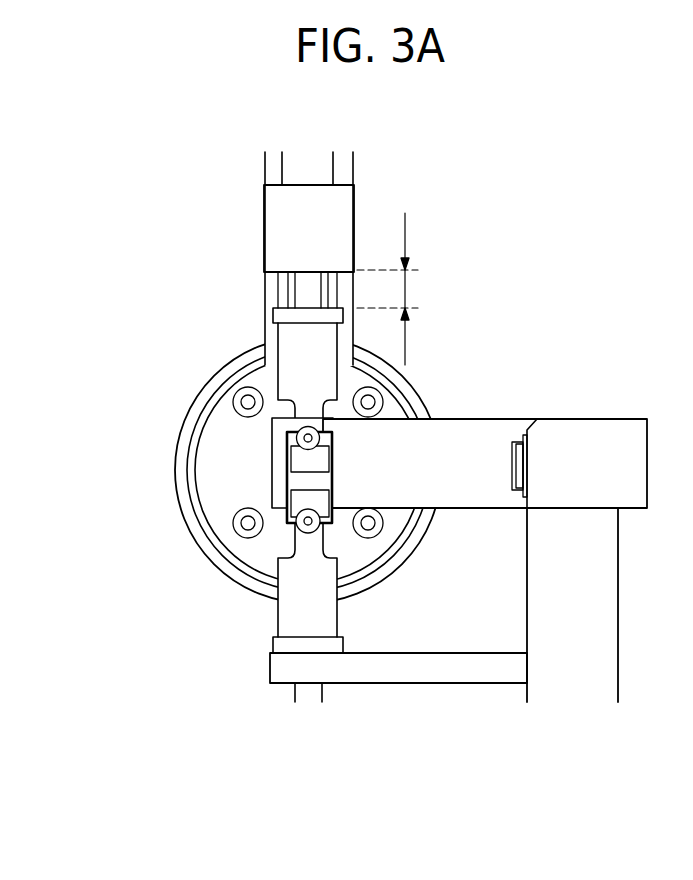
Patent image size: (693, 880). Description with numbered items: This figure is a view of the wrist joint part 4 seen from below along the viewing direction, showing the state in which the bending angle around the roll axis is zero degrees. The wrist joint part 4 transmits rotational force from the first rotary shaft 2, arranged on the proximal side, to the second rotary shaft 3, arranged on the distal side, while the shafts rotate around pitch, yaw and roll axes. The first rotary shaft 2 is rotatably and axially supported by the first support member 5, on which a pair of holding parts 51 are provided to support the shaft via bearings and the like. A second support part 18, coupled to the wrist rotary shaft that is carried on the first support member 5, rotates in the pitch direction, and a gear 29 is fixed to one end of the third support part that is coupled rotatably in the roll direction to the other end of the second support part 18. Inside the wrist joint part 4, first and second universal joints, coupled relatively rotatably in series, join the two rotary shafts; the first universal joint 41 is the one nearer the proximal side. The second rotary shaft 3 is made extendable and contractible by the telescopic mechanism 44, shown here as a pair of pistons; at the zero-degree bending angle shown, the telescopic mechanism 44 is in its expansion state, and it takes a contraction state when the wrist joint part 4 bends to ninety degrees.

The first rotary shaft 2 is at (300, 694).
The second rotary shaft 3 is at (374, 387).
The wrist joint part 4 is at (117, 640).
The first support member 5 is at (617, 612).
The second support part 18 is at (493, 435).
The gear 29 is at (213, 487).
The first universal joint 41 is at (288, 522).
The telescopic mechanism 44 is at (277, 238).
The holding parts 51 is at (455, 677).